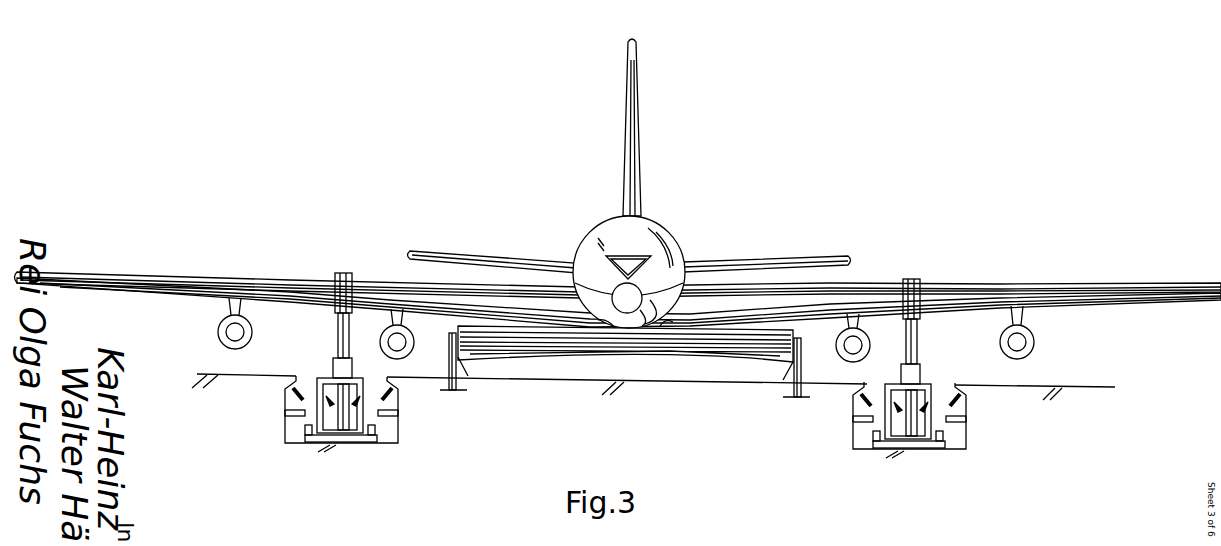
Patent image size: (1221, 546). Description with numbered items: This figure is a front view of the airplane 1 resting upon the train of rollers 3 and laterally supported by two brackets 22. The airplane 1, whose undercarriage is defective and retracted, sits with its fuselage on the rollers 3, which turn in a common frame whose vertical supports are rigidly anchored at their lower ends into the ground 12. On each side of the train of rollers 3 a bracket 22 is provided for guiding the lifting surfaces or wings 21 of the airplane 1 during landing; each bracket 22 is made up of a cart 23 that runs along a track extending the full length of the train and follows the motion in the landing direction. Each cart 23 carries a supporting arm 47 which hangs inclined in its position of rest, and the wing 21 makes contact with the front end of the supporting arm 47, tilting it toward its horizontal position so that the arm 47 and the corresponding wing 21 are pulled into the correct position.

The airplane 1 is at (657, 219).
The wing 21 is at (1068, 298).
The supporting arm 47 is at (335, 275).
The bracket 22 is at (319, 368).
The cart 23 is at (307, 418).
The ground 12 is at (563, 382).
The rollers 3 is at (670, 344).